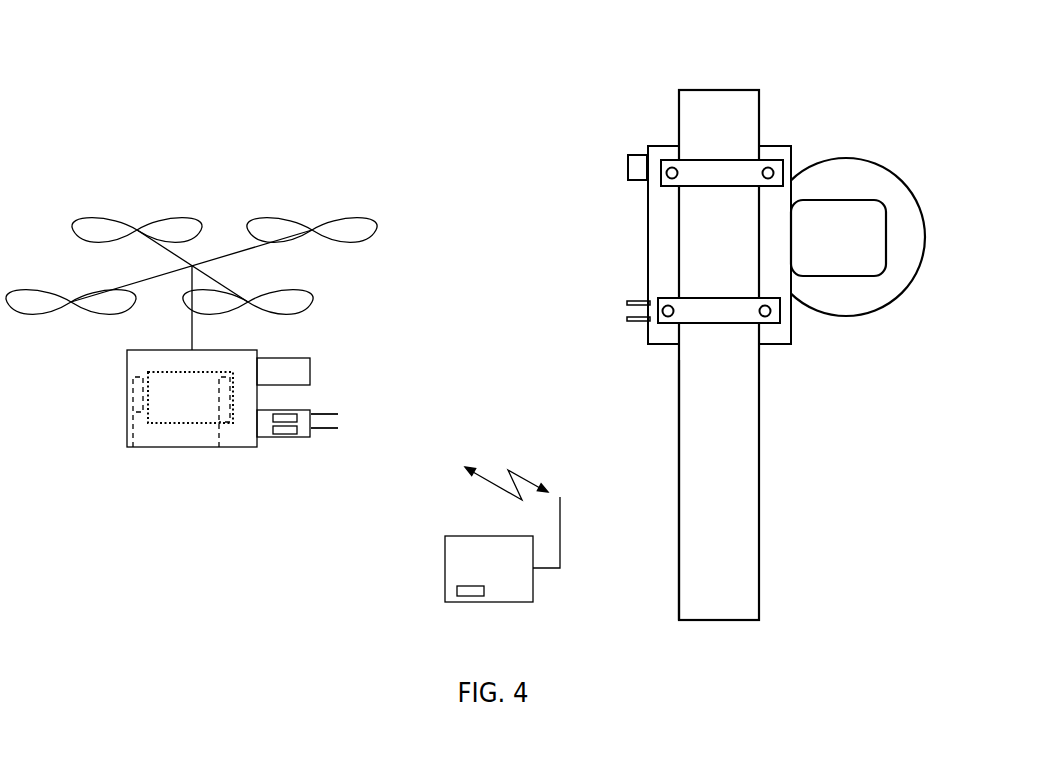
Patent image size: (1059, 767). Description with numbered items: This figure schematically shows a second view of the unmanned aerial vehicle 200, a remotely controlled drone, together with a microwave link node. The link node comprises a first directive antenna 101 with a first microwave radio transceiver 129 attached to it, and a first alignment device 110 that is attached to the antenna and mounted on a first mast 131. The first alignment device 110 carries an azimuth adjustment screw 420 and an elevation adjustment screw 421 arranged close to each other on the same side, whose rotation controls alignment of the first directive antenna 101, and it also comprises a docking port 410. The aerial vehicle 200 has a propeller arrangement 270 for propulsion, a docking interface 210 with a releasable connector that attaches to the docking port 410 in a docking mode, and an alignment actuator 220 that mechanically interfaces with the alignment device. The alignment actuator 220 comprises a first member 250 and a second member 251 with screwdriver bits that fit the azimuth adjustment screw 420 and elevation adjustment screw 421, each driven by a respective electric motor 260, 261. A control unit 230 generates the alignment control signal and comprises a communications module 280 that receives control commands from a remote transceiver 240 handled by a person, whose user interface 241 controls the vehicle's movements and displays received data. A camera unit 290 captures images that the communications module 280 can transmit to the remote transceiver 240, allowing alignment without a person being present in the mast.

The first directive antenna 101 is at (853, 305).
The first alignment device 110 is at (794, 61).
The first microwave radio transceiver 129 is at (819, 251).
The first mast 131 is at (703, 430).
The unmanned aerial vehicle 200 is at (310, 161).
The docking interface 210 is at (313, 368).
The alignment actuator 220 is at (275, 440).
The control unit 230 is at (173, 409).
The remote transceiver 240 is at (451, 557).
The user interface 241 is at (473, 592).
The first member 250 is at (357, 421).
The second member 251 is at (354, 441).
The electric motor 260 is at (286, 414).
The electric motor 261 is at (293, 434).
The propeller arrangement 270 is at (205, 242).
The communications module 280 is at (222, 447).
The camera unit 290 is at (135, 447).
The docking port 410 is at (610, 168).
The azimuth adjustment screw 420 is at (608, 298).
The elevation adjustment screw 421 is at (608, 324).